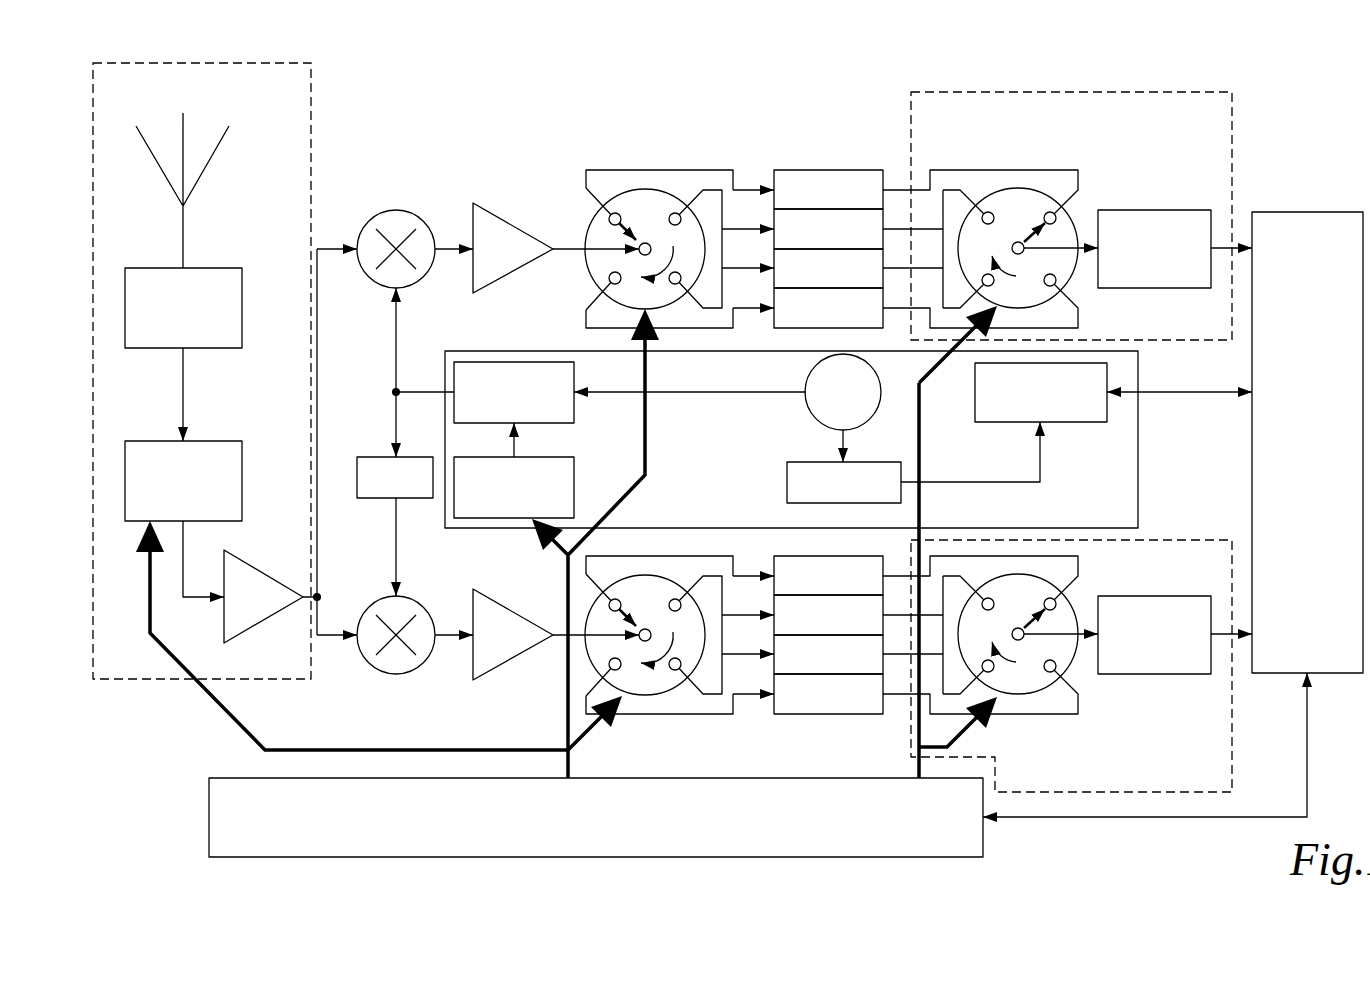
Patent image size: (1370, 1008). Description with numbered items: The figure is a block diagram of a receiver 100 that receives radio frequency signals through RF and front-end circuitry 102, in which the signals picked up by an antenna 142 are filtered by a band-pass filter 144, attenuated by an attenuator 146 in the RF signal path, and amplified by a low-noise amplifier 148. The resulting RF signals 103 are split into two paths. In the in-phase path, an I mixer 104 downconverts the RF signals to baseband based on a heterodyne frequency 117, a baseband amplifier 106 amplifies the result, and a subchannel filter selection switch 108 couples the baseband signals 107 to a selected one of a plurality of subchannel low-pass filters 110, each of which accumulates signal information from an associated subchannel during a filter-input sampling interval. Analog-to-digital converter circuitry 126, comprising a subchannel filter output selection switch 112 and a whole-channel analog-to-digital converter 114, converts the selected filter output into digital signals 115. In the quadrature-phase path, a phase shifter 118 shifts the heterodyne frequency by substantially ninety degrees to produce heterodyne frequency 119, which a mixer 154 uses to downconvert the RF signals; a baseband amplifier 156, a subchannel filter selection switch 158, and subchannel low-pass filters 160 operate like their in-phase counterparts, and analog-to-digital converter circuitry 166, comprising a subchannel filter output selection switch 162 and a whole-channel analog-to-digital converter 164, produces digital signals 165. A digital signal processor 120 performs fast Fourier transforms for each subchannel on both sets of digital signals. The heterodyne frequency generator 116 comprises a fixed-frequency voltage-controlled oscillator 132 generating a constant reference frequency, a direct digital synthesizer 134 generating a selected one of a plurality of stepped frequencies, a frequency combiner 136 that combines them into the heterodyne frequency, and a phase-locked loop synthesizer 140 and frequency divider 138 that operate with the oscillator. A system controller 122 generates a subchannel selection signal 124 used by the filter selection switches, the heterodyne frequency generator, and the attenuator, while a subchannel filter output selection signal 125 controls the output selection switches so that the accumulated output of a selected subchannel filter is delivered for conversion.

The receiver 100 is at (470, 98).
The RF and front-end circuitry 102 is at (311, 103).
The RF signals 103 is at (318, 380).
The in-phase (I) mixer 104 is at (414, 208).
The baseband amplifier 106 is at (513, 222).
The baseband signals 107 is at (568, 249).
The subchannel filter selection switch 108 is at (647, 187).
The subchannel low-pass filters 110 is at (781, 168).
The subchannel filter output selection switch 112 is at (1020, 188).
The whole-channel analog-to-digital converter 114 is at (1180, 210).
The digital signals 115 is at (1218, 251).
The heterodyne frequency generator 116 is at (1140, 376).
The heterodyne frequency 117 is at (400, 350).
The phase shifter 118 is at (377, 456).
The heterodyne frequency 119 is at (400, 538).
The digital signal processor 120 is at (1325, 210).
The system controller 122 is at (245, 778).
The subchannel selection signal 124 is at (648, 432).
The subchannel filter output selection signal 125 is at (919, 366).
The analog-to-digital converter circuitry 126 is at (1233, 113).
The fixed-frequency voltage-controlled oscillator 132 is at (813, 422).
The direct digital synthesizer 134 is at (576, 470).
The frequency combiner 136 is at (576, 375).
The frequency divider 138 is at (870, 459).
The phase-locked loop synthesizer 140 is at (1047, 432).
The antenna 142 is at (180, 236).
The band-pass filter 144 is at (224, 268).
The attenuator 146 is at (224, 441).
The low-noise amplifier 148 is at (265, 571).
The mixer 154 is at (416, 600).
The baseband amplifier 156 is at (513, 612).
The subchannel filter selection switch 158 is at (647, 573).
The subchannel low-pass filters 160 is at (782, 716).
The subchannel filter output selection switch 162 is at (1020, 574).
The whole-channel analog-to-digital converter 164 is at (1180, 596).
The digital signals 165 is at (1218, 632).
The analog-to-digital converter circuitry 166 is at (1233, 763).